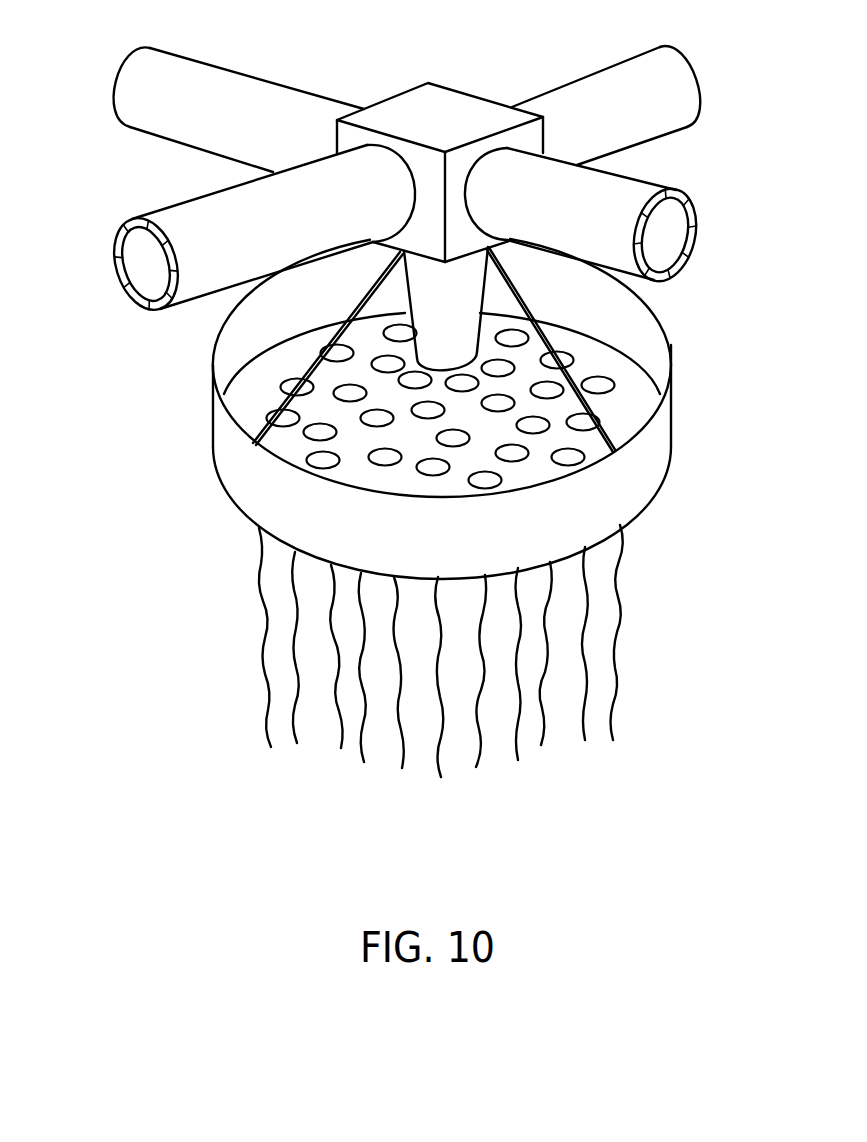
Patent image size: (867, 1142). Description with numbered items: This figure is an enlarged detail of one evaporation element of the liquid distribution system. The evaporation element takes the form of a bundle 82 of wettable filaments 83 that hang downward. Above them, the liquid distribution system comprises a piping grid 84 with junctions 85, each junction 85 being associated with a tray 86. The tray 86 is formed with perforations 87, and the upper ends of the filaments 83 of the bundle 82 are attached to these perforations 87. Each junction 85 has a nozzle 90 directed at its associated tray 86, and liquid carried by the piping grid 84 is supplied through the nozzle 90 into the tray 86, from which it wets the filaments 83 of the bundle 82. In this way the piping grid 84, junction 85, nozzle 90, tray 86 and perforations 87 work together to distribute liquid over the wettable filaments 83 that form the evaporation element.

The bundle 82 is at (200, 630).
The wettable filaments 83 is at (587, 640).
The piping grid 84 is at (215, 110).
The junction 85 is at (428, 117).
The tray 86 is at (237, 435).
The perforations 87 is at (602, 387).
The nozzle 90 is at (457, 298).